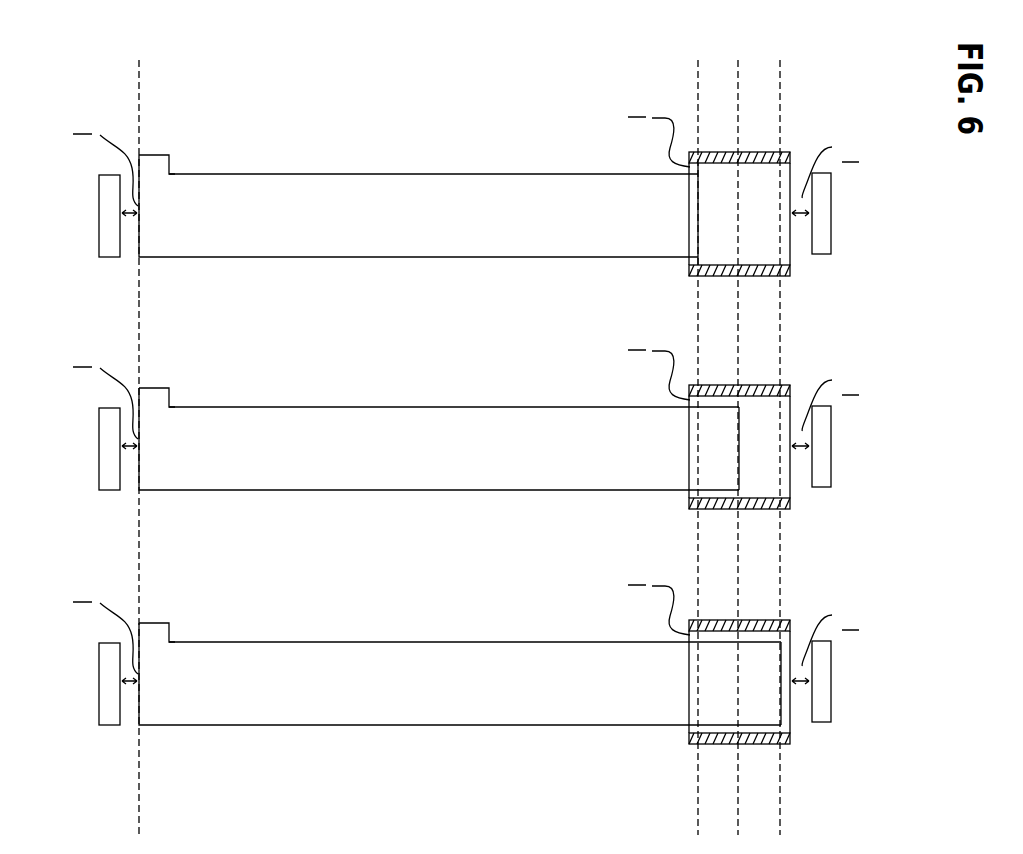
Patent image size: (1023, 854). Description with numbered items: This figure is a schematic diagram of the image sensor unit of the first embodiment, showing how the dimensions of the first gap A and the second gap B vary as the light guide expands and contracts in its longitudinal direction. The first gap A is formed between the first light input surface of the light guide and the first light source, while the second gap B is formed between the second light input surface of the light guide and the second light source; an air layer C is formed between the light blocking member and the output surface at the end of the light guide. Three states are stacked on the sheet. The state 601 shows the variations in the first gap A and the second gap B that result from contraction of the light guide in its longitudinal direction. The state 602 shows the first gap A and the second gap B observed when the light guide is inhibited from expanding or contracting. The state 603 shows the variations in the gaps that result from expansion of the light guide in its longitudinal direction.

The state 601 is at (476, 121).
The state 602 is at (479, 361).
The state 603 is at (479, 584).